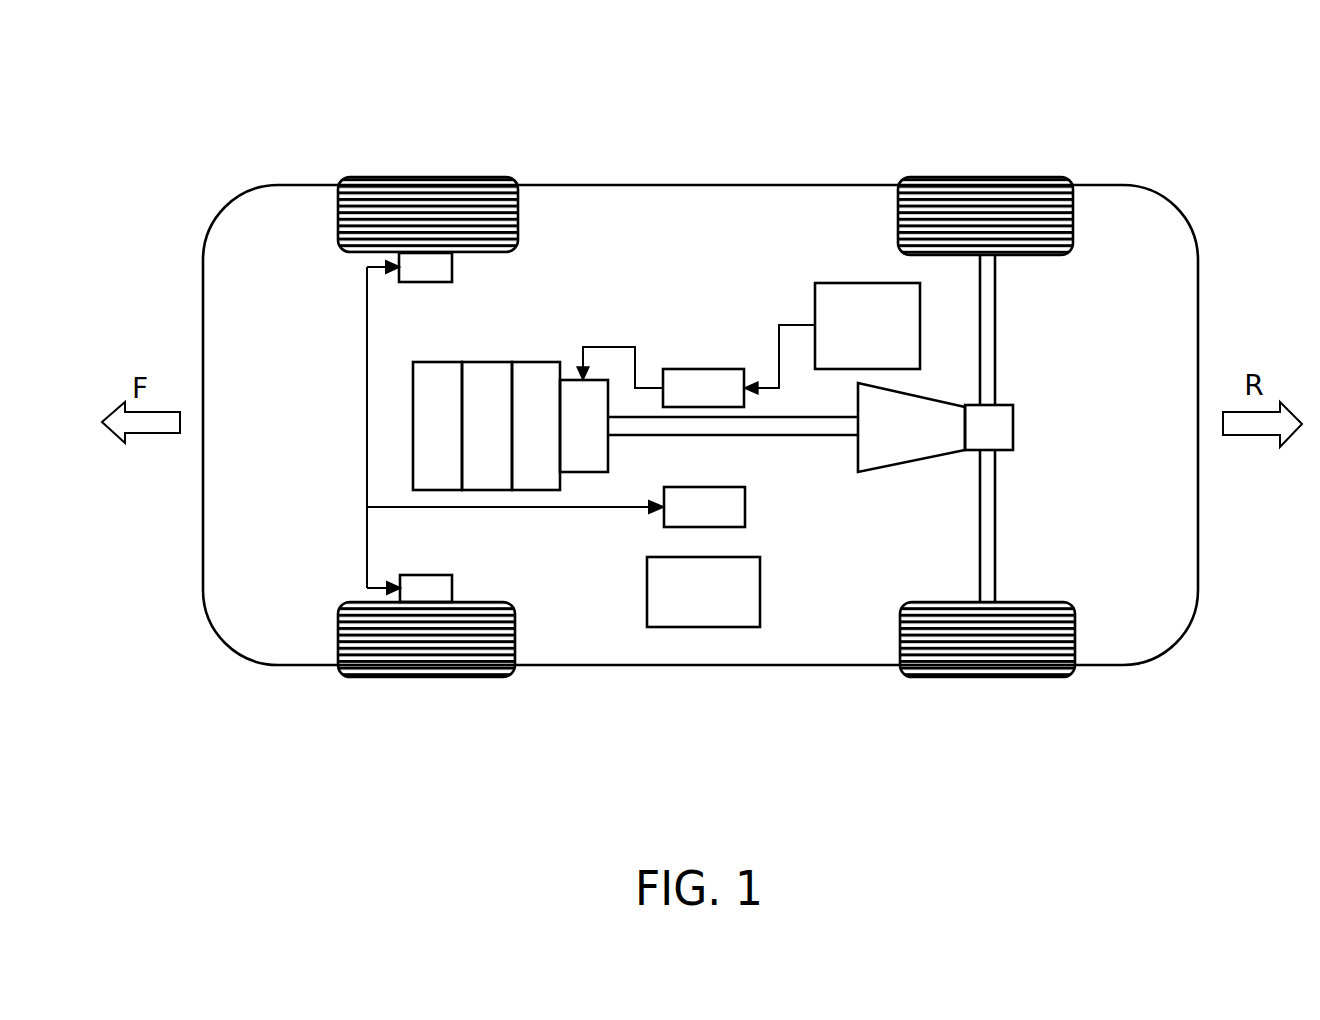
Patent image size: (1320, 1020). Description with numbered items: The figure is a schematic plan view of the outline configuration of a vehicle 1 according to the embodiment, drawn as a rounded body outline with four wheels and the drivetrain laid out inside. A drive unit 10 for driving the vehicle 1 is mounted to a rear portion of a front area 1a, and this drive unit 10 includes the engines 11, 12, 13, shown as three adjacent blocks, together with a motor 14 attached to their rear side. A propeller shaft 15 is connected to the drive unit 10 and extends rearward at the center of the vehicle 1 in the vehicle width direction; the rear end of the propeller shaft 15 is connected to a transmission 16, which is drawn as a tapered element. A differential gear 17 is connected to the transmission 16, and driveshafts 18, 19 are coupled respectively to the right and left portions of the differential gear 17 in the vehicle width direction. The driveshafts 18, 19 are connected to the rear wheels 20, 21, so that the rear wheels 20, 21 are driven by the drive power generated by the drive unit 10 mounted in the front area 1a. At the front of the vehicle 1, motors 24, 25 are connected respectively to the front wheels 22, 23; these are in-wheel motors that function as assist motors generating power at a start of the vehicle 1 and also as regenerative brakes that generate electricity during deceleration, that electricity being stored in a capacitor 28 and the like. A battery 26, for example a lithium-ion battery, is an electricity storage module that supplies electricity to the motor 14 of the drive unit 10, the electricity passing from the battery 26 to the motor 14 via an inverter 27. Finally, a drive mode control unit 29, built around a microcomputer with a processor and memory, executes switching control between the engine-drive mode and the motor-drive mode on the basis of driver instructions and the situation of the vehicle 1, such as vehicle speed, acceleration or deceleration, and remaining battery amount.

The vehicle 1 is at (1137, 157).
The front area 1a is at (306, 462).
The drive unit 10 is at (520, 738).
The engine 11 is at (437, 462).
The engine 12 is at (488, 462).
The engine 13 is at (533, 460).
The motor 14 is at (587, 453).
The propeller shaft 15 is at (800, 430).
The transmission 16 is at (910, 423).
The differential gear 17 is at (1003, 415).
The driveshaft 18 is at (990, 550).
The driveshaft 19 is at (990, 325).
The rear wheel 20 is at (1035, 645).
The rear wheel 21 is at (990, 198).
The front wheel 22 is at (385, 655).
The front wheel 23 is at (383, 198).
The motor 24 is at (410, 578).
The motor 25 is at (410, 260).
The battery 26 is at (858, 310).
The inverter 27 is at (705, 385).
The capacitor 28 is at (727, 508).
The drive mode control unit 29 is at (703, 607).